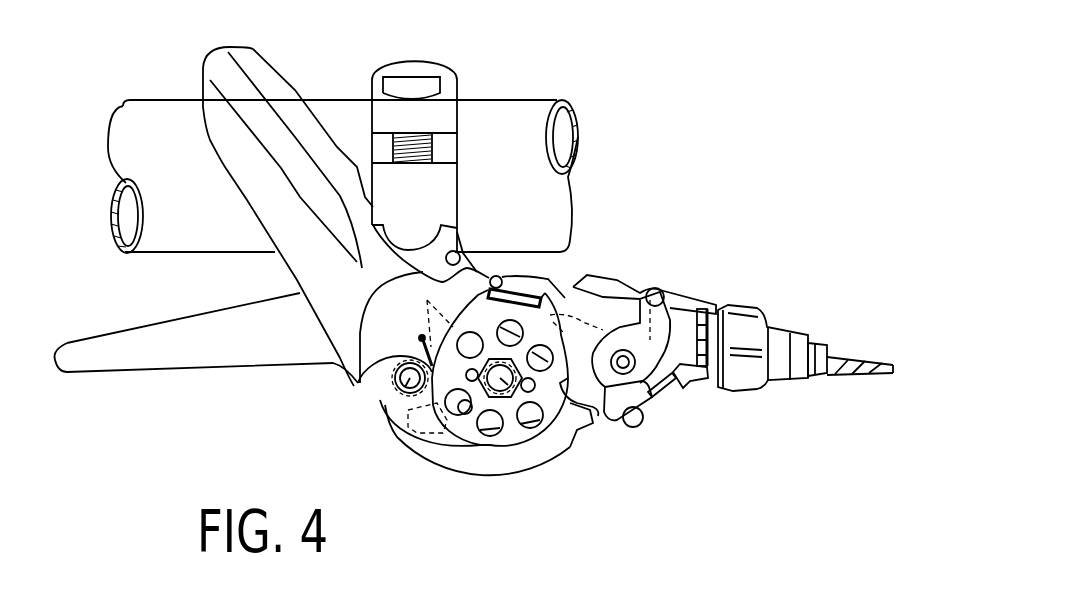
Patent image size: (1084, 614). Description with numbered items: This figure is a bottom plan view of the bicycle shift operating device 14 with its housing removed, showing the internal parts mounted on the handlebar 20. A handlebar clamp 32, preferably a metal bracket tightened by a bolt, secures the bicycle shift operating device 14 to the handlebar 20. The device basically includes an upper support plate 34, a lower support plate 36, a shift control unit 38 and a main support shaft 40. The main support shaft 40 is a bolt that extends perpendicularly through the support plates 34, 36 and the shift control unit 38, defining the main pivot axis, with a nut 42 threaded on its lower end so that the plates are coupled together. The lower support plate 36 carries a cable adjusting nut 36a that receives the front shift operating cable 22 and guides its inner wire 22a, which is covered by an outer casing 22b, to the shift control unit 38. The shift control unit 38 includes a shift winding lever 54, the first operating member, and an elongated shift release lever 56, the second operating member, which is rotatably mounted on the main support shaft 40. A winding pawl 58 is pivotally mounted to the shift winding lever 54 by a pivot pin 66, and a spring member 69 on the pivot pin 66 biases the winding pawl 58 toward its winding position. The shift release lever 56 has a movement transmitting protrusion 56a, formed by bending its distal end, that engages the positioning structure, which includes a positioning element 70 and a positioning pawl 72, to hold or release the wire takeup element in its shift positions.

The bicycle shift operating device 14 is at (713, 190).
The handlebar 20 is at (533, 100).
The front shift operating cable 22 is at (850, 305).
The inner wire 22a is at (866, 327).
The outer casing 22b is at (818, 343).
The handlebar clamp 32 is at (383, 67).
The upper support plate 34 is at (707, 303).
The lower support plate 36 is at (670, 398).
The cable adjusting nut 36a is at (757, 303).
The shift control unit 38 is at (515, 485).
The main support shaft 40 is at (520, 390).
The nut 42 is at (513, 397).
The shift winding lever 54 is at (220, 53).
The shift release lever 56 is at (105, 375).
The movement transmitting protrusion 56a is at (640, 293).
The winding pawl 58 is at (397, 405).
The pivot pin 66 is at (410, 380).
The spring member 69 is at (372, 383).
The positioning element 70 is at (572, 452).
The positioning pawl 72 is at (613, 423).